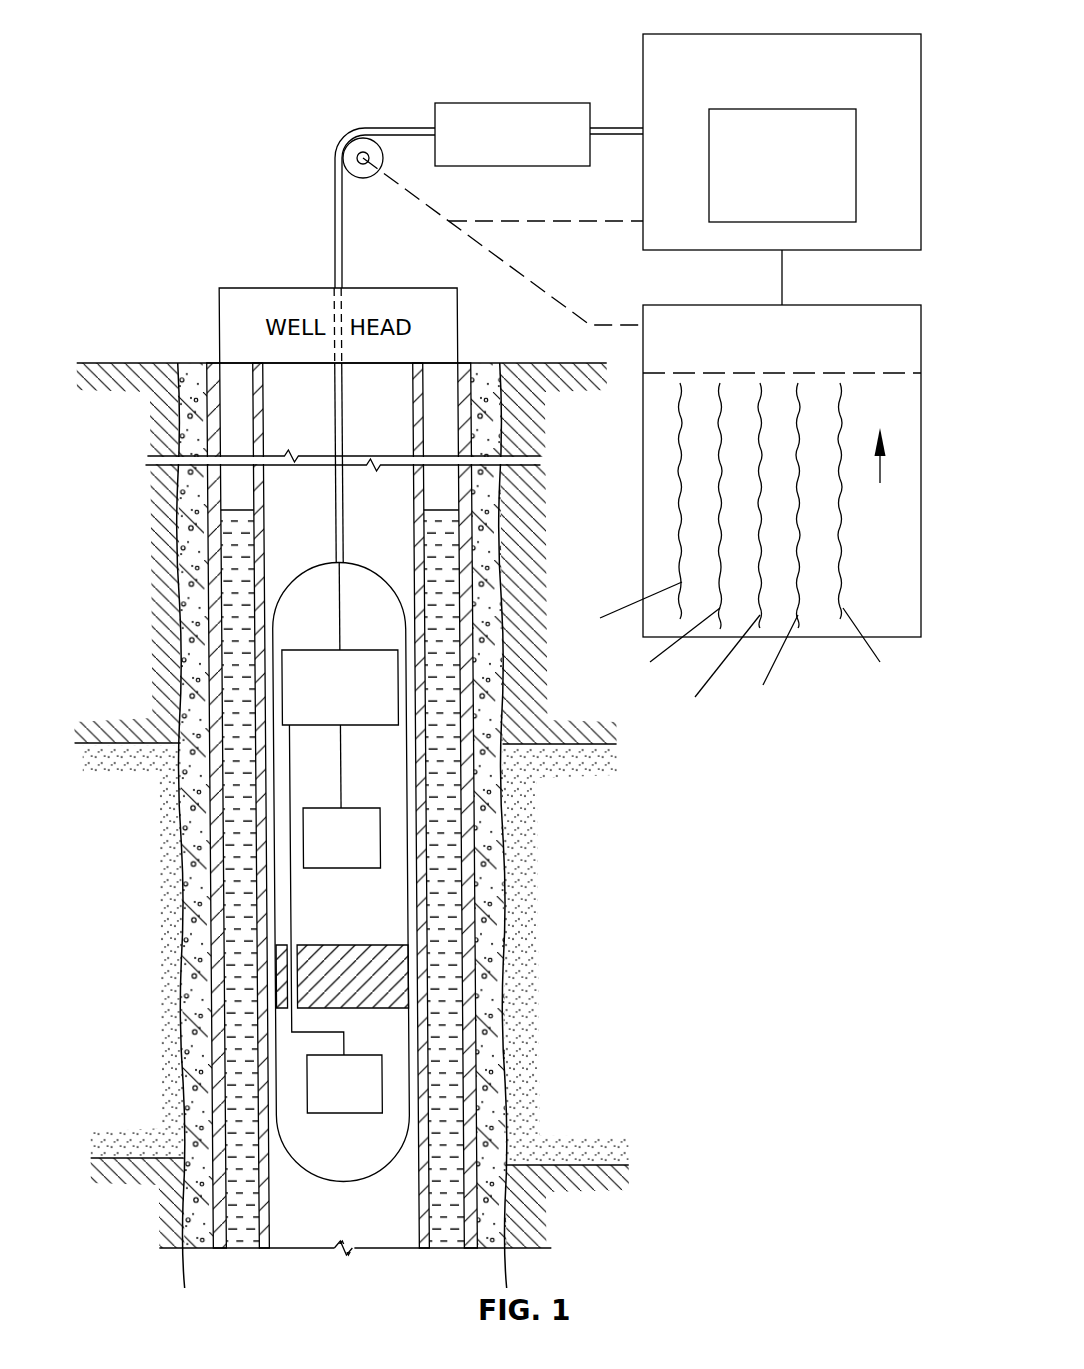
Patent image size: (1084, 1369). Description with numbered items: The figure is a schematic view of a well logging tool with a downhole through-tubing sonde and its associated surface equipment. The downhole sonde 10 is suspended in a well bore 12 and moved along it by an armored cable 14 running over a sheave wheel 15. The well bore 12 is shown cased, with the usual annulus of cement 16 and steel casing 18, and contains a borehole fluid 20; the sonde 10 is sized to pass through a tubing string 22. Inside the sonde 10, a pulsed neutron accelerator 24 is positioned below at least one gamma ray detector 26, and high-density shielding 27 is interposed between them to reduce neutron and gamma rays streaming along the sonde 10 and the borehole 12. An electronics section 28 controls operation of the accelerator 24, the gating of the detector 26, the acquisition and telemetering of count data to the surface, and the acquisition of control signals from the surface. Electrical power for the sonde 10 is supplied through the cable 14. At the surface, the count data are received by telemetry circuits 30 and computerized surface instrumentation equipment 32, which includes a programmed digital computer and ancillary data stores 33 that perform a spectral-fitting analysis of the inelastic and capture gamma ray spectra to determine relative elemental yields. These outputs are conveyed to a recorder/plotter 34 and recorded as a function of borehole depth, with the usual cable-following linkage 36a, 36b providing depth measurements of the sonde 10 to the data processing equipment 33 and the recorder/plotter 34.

The downhole sonde 10 is at (441, 872).
The well bore 12 is at (492, 498).
The armored cable 14 is at (343, 135).
The sheave wheel 15 is at (347, 158).
The annulus of cement 16 is at (185, 1073).
The steel casing 18 is at (205, 620).
The borehole fluid 20 is at (227, 545).
The tubing string 22 is at (425, 1107).
The pulsed neutron accelerator 24 is at (332, 1113).
The gamma ray detector 26 is at (357, 808).
The high-density shielding 27 is at (391, 985).
The electronics section 28 is at (315, 650).
The telemetry circuits 30 is at (498, 103).
The surface instrumentation equipment 32 is at (643, 53).
The digital computer and ancillary data stores 33 is at (856, 168).
The recorder/plotter 34 is at (847, 305).
The cable-following linkage 36a is at (555, 221).
The cable-following linkage 36b is at (520, 290).